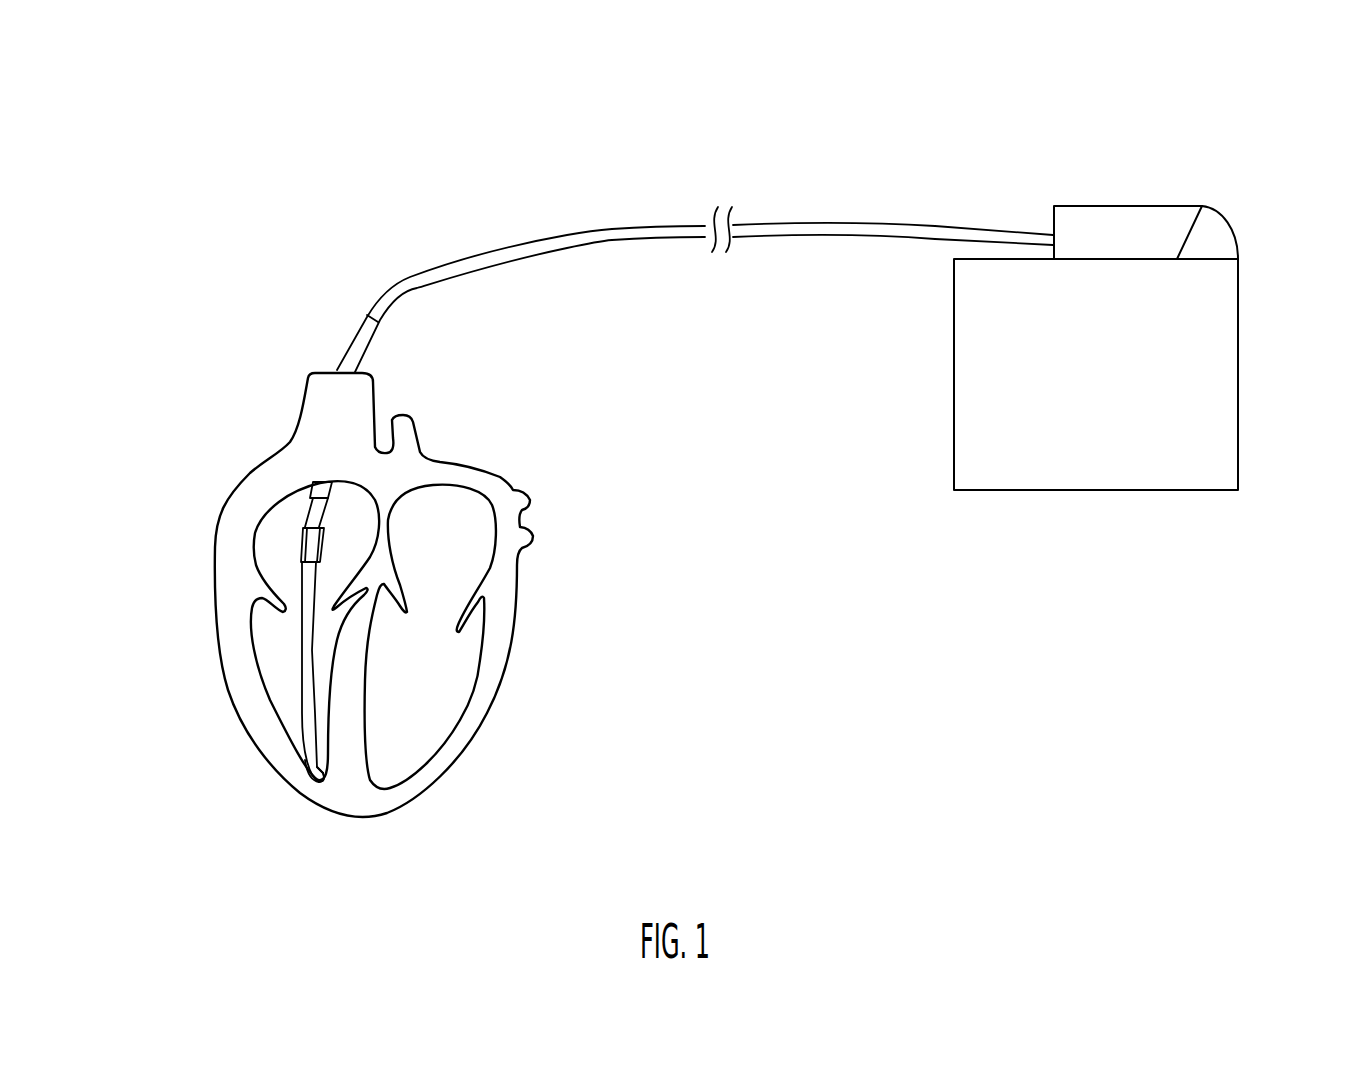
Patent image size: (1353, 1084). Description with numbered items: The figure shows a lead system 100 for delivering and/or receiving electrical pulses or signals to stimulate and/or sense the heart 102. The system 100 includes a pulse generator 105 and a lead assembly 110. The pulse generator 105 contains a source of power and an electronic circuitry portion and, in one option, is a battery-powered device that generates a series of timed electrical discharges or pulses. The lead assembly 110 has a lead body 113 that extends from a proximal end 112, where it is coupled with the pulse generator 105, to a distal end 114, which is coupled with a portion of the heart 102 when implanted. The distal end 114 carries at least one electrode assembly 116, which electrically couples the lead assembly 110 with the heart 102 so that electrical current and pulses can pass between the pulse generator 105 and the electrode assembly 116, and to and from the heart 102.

The lead system 100 is at (880, 128).
The heart 102 is at (238, 518).
The pulse generator 105 is at (1240, 284).
The lead assembly 110 is at (600, 486).
The proximal end 112 is at (1018, 231).
The lead body 113 is at (630, 229).
The distal end 114 is at (322, 773).
The electrode assembly 116 is at (306, 543).